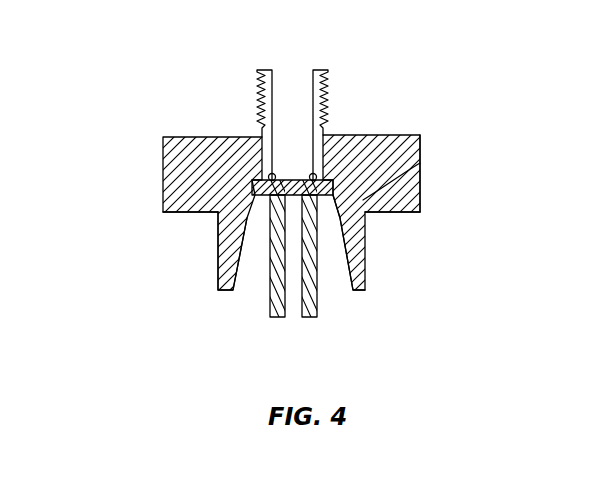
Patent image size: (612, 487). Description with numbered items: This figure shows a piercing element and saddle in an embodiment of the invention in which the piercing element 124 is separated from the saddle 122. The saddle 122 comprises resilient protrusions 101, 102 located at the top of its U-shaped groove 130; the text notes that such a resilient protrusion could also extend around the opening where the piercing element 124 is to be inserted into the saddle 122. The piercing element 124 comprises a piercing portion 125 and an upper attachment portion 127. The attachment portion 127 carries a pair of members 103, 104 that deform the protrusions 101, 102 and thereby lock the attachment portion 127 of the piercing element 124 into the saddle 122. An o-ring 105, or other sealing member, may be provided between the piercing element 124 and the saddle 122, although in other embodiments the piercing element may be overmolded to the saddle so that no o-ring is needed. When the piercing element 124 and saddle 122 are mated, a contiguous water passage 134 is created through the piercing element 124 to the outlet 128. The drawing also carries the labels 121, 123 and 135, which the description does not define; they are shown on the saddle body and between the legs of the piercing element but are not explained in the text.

The resilient protrusion 101 is at (258, 205).
The resilient protrusion 102 is at (420, 163).
The member 103 is at (218, 213).
The member 104 is at (317, 176).
The o-ring 105 is at (268, 177).
The right housing block 121 is at (360, 135).
The saddle 122 is at (420, 152).
The lower shoulder 123 is at (405, 213).
The piercing element 124 is at (270, 305).
The piercing portion 125 is at (317, 305).
The attachment portion 127 is at (320, 215).
The outlet 128 is at (323, 72).
The U-shaped groove 130 is at (225, 245).
The water passage 134 is at (288, 82).
The passage 135 is at (292, 312).